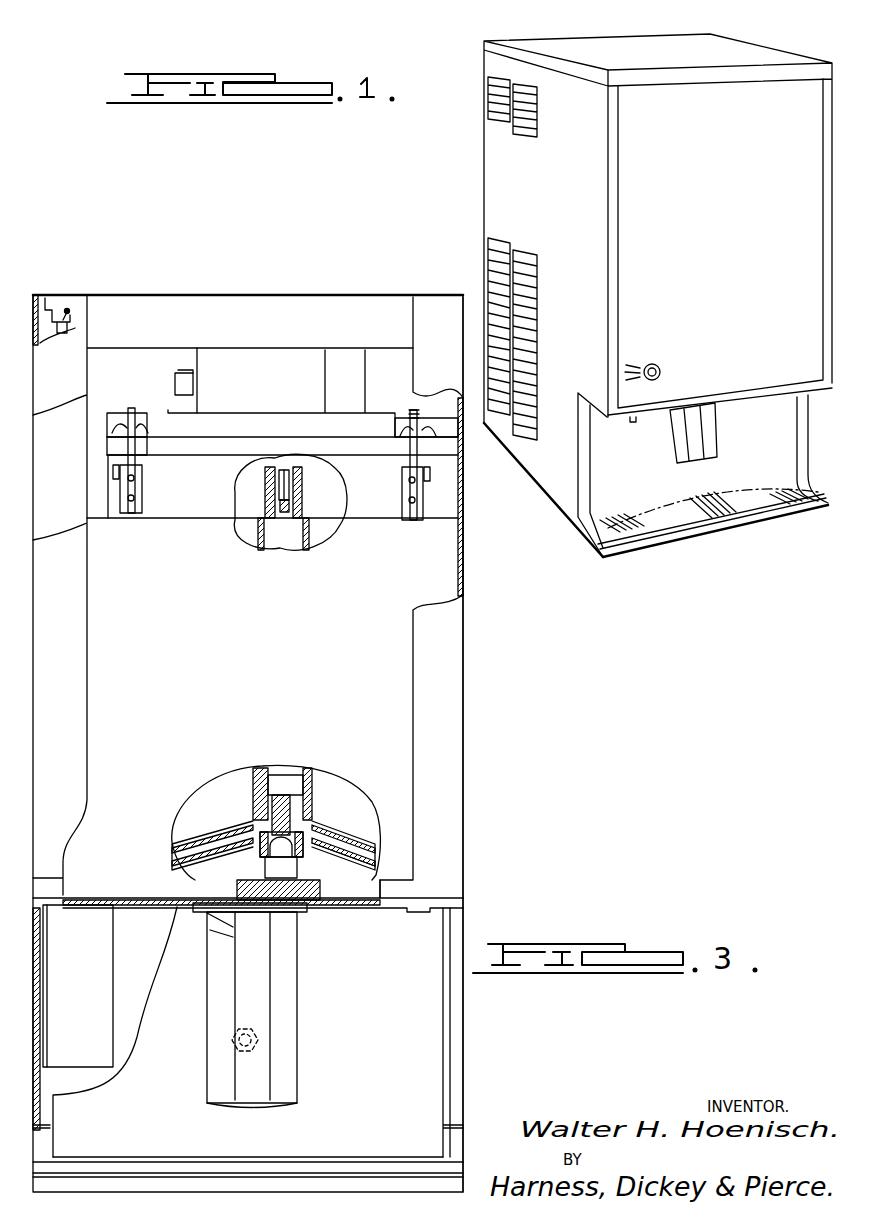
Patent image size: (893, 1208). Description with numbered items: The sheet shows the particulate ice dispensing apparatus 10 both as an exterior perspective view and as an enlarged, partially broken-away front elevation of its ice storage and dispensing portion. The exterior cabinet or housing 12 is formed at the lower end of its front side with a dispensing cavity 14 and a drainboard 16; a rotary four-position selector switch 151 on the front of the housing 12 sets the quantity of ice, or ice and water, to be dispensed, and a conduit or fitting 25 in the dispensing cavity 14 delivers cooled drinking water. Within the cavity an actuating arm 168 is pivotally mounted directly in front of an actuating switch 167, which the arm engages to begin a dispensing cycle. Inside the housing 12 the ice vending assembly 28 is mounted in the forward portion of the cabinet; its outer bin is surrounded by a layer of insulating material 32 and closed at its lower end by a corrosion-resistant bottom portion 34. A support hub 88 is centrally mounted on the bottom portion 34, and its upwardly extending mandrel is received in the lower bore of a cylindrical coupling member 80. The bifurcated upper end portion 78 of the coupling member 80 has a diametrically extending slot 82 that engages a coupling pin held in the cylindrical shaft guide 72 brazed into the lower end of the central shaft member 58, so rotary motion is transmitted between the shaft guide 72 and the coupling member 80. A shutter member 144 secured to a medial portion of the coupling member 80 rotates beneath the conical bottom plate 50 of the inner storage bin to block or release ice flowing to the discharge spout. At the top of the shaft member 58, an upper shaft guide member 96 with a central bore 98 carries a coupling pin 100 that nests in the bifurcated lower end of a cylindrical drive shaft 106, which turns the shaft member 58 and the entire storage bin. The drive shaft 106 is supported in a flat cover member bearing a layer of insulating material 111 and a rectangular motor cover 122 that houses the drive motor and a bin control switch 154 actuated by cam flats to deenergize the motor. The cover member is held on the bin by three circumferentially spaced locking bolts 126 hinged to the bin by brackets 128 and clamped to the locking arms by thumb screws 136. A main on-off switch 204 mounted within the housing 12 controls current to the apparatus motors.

In FIG. 1, the ice dispensing apparatus 10 is at (490, 716).
In FIG. 3, the ice dispensing apparatus 10 is at (470, 187).
In FIG. 1, the exterior cabinet or housing 12 is at (468, 626).
In FIG. 3, the exterior cabinet or housing 12 is at (553, 504).
In FIG. 1, the dispensing cavity 14 is at (417, 1043).
In FIG. 3, the dispensing cavity 14 is at (763, 437).
In FIG. 1, the drainboard 16 is at (339, 1158).
In FIG. 3, the drainboard 16 is at (745, 510).
In FIG. 1, the conduit or fitting 25 is at (224, 936).
In FIG. 1, the ice vending assembly 28 is at (79, 516).
In FIG. 1, the insulating material 32 is at (434, 520).
In FIG. 1, the bottom portion 34 is at (240, 892).
In FIG. 1, the bottom plate 50 is at (333, 828).
In FIG. 1, the central hub or shaft member 58 is at (312, 537).
In FIG. 1, the shaft guide 72 is at (296, 790).
In FIG. 1, the bifurcated upper end portion 78 is at (314, 780).
In FIG. 1, the coupling member 80 is at (264, 832).
In FIG. 1, the slot 82 is at (278, 793).
In FIG. 1, the support hub 88 is at (302, 869).
In FIG. 1, the upper shaft guide member 96 is at (289, 520).
In FIG. 1, the central bore 98 is at (266, 503).
In FIG. 1, the coupling pin 100 is at (290, 440).
In FIG. 1, the drive shaft 106 is at (262, 522).
In FIG. 1, the insulating material 111 is at (146, 408).
In FIG. 1, the motor cover 122 is at (347, 332).
In FIG. 1, the locking bolts 126 is at (138, 444).
In FIG. 1, the brackets 128 is at (144, 509).
In FIG. 1, the thumb screws 136 is at (106, 429).
In FIG. 1, the shutter member 144 is at (372, 850).
In FIG. 3, the selector switch 151 is at (662, 364).
In FIG. 1, the bin control switch 154 is at (172, 384).
In FIG. 1, the actuating switch 167 is at (229, 1049).
In FIG. 1, the actuating arm 168 is at (307, 1017).
In FIG. 3, the actuating arm 168 is at (672, 452).
In FIG. 1, the main on-off switch 204 is at (78, 327).